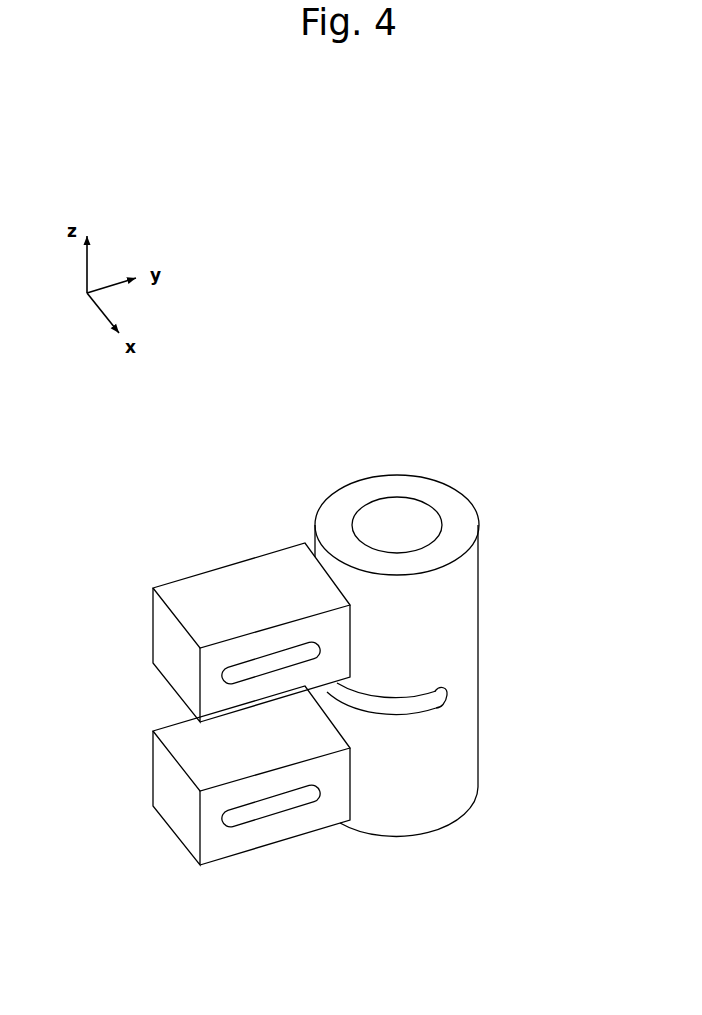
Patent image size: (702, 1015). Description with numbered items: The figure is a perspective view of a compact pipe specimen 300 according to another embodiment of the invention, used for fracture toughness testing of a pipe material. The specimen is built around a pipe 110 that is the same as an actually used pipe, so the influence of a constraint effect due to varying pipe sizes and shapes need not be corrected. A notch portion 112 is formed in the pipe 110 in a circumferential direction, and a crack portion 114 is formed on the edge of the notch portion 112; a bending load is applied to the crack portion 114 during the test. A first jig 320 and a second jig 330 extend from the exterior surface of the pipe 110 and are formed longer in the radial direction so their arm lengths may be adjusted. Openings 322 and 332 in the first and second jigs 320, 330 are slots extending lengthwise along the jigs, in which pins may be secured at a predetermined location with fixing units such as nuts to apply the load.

The compact pipe specimen 300 is at (428, 613).
The pipe 110 is at (460, 600).
The notch portion 112 is at (421, 712).
The crack portion 114 is at (454, 688).
The first jig 320 is at (212, 615).
The opening 322 is at (236, 668).
The second jig 330 is at (230, 807).
The opening 332 is at (233, 828).